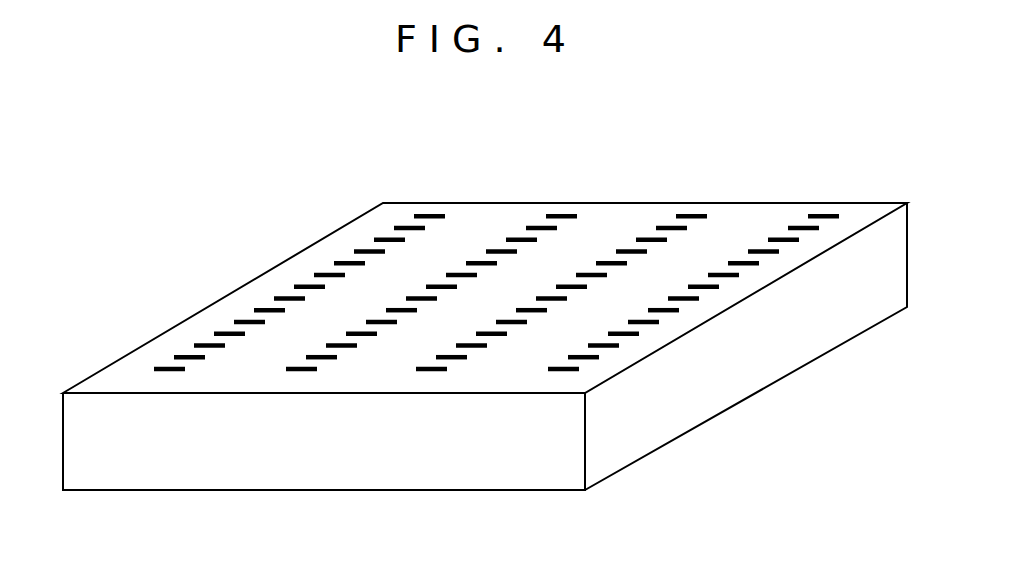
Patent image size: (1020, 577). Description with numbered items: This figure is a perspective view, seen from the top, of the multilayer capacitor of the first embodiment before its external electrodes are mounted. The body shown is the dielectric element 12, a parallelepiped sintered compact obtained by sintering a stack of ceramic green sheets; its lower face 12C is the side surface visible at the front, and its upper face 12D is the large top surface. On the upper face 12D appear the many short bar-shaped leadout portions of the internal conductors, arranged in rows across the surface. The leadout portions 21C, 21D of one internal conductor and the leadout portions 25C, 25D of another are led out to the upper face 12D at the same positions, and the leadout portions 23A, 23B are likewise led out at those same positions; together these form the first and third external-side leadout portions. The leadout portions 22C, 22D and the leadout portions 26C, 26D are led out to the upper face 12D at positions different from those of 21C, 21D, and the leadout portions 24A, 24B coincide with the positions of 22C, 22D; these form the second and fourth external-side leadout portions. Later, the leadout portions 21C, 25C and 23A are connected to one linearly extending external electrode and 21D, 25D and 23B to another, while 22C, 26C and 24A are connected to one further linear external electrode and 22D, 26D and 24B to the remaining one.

The dielectric element 12 is at (485, 334).
The lower face 12C is at (398, 492).
The upper face 12D is at (605, 215).
The leadout portion 21C is at (438, 358).
The leadout portion 21D is at (170, 366).
The leadout portion 22C is at (570, 358).
The leadout portion 22D is at (308, 358).
The leadout portion 23A is at (478, 335).
The leadout portion 23B is at (203, 355).
The leadout portion 24A is at (610, 335).
The leadout portion 24B is at (348, 335).
The leadout portion 25C is at (519, 311).
The leadout portion 25D is at (250, 320).
The leadout portion 26C is at (651, 311).
The leadout portion 26D is at (388, 311).